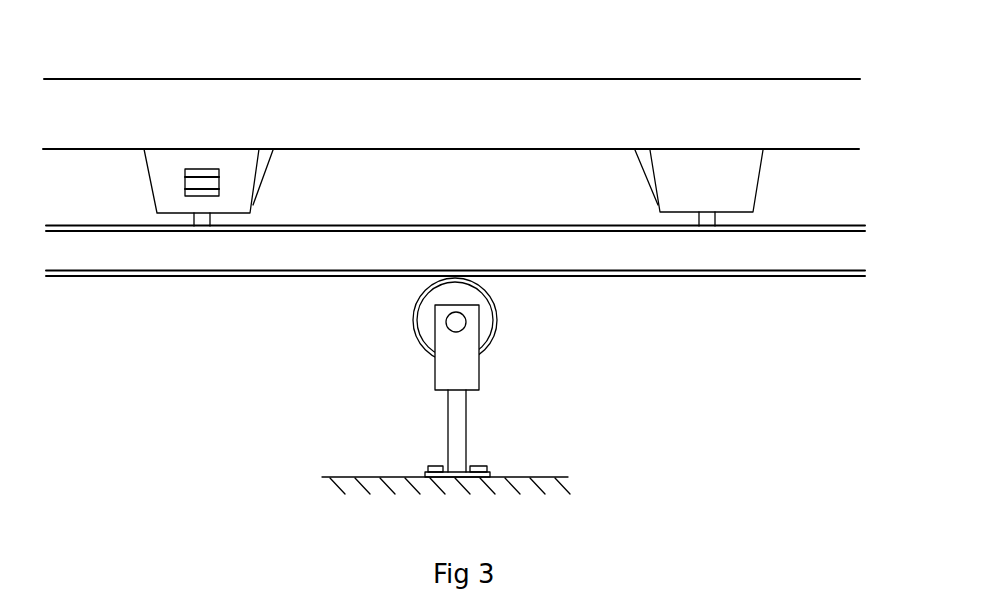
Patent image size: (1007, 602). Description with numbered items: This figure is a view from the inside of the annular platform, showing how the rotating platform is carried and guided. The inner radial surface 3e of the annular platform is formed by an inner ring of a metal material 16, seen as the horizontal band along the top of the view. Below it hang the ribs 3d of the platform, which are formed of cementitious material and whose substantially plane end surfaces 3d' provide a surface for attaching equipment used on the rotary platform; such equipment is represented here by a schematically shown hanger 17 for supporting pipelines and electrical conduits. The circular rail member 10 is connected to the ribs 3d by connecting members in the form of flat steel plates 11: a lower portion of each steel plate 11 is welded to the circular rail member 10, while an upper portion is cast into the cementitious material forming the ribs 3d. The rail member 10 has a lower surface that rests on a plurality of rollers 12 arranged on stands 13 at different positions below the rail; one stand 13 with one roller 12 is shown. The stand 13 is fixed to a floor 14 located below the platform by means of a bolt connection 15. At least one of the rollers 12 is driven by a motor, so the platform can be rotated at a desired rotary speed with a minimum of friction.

The inner radial surface 3e is at (327, 110).
The inner ring of a metal material 16 is at (465, 110).
The ribs 3d is at (444, 159).
The plane end surfaces 3d' is at (199, 152).
The hanger 17 is at (194, 184).
The flat steel plates 11 is at (202, 218).
The circular rail member 10 is at (293, 260).
The rollers 12 is at (472, 296).
The stand 13 is at (448, 376).
The bolt connection 15 is at (428, 465).
The floor 14 is at (513, 477).